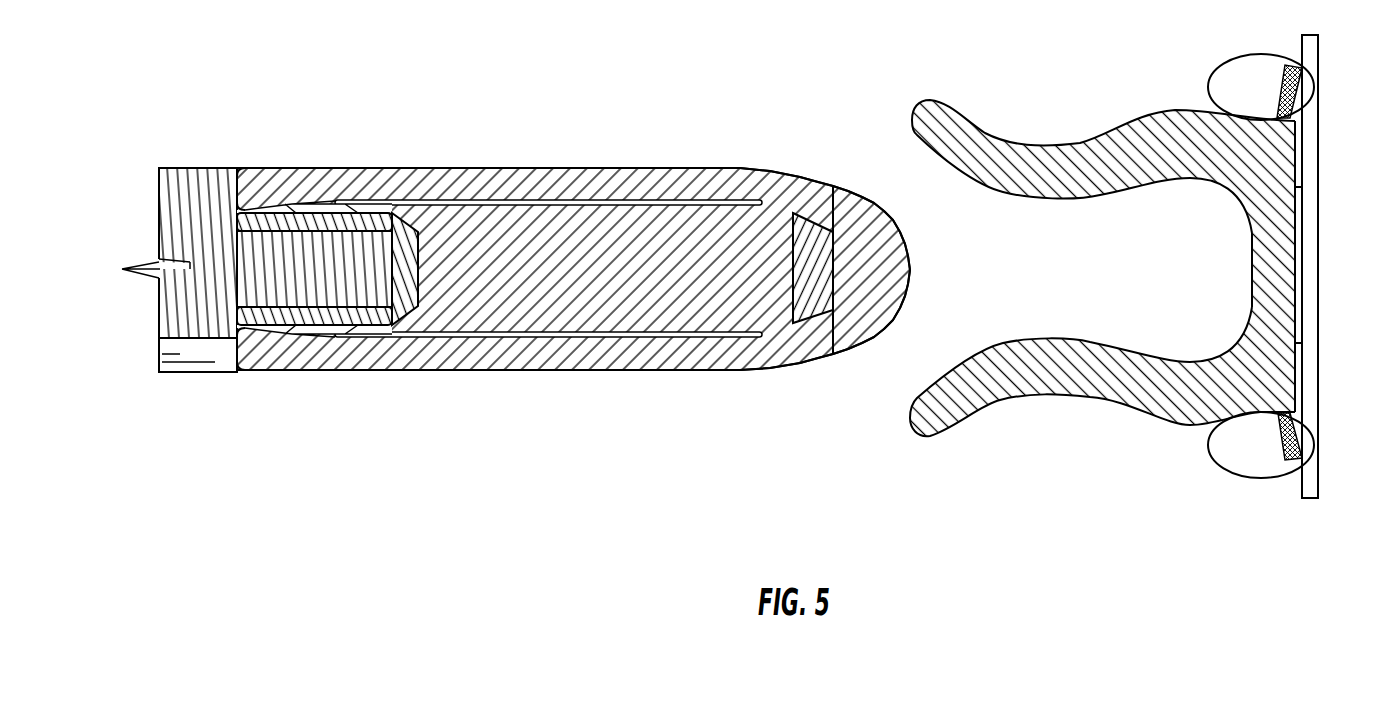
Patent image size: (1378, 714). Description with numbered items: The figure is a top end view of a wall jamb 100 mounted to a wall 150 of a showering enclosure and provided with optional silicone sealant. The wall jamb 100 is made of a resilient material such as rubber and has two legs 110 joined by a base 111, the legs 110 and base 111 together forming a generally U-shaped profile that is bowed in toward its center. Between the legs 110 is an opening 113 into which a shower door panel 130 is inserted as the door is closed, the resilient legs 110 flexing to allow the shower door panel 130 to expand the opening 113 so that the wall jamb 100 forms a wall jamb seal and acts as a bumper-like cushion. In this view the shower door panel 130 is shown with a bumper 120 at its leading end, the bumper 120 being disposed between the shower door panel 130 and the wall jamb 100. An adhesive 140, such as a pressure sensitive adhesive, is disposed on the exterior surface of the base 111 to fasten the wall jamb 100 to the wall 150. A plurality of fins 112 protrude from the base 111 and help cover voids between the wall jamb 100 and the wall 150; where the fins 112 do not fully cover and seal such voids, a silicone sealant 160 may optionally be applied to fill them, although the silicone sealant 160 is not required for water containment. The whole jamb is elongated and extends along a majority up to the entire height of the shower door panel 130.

The wall jamb 100 is at (900, 103).
The legs 110 is at (998, 135).
The base 111 is at (1252, 268).
The fins 112 is at (1287, 65).
The opening 113 is at (1106, 270).
The bumper 120 is at (866, 345).
The shower door panel 130 is at (435, 372).
The adhesive 140 is at (1302, 262).
The wall 150 is at (1318, 208).
The silicone sealant 160 is at (1208, 88).